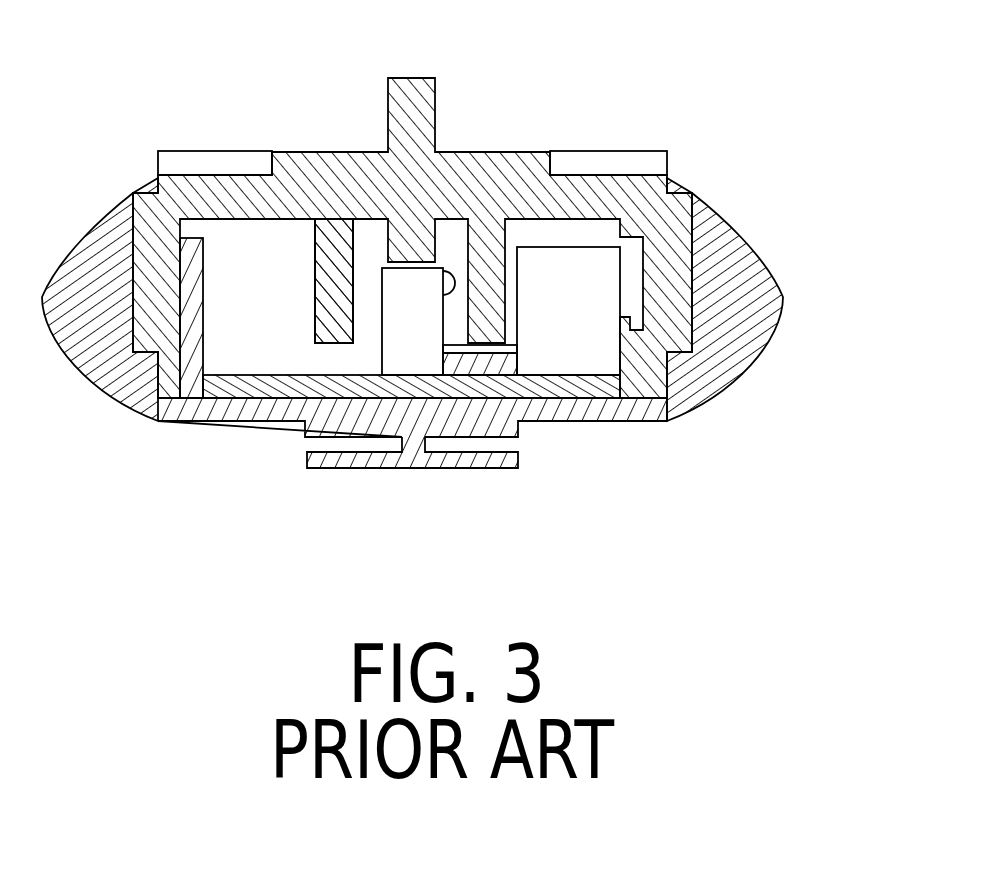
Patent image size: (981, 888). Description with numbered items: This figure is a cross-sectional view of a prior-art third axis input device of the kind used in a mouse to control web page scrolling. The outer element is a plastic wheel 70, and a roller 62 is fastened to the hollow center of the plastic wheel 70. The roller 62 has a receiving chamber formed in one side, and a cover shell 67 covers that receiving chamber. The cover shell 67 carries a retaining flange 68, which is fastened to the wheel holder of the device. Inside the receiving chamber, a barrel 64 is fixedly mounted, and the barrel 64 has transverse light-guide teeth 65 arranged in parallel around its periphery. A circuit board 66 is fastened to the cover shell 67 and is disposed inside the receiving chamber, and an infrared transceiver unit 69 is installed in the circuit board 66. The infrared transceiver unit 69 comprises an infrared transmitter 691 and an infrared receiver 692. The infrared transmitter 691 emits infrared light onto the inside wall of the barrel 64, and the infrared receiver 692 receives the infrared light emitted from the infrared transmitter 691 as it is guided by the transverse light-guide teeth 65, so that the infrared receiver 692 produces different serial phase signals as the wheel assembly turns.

The roller 62 is at (493, 162).
The barrel 64 is at (334, 262).
The transverse light-guide teeth 65 is at (314, 253).
The circuit board 66 is at (312, 383).
The cover shell 67 is at (640, 408).
The retaining flange 68 is at (451, 456).
The infrared transceiver unit 69 is at (630, 553).
The infrared transmitter 691 is at (425, 363).
The infrared receiver 692 is at (590, 347).
The plastic wheel 70 is at (778, 280).